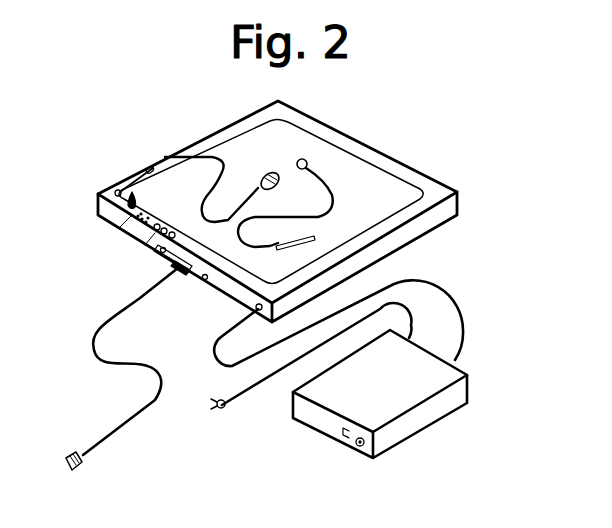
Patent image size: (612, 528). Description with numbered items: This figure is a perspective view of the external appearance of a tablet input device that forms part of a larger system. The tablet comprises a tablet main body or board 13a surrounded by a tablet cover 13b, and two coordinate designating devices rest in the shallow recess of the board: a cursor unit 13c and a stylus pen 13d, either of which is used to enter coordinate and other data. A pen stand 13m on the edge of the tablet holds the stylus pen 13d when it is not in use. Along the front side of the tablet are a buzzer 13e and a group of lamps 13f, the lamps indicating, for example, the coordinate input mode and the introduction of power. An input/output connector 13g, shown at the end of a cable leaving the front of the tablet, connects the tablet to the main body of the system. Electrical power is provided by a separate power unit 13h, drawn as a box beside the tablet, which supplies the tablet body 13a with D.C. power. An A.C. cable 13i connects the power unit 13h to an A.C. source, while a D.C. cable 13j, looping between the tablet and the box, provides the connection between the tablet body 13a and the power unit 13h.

The tablet main body 13a is at (395, 193).
The tablet cover 13b is at (444, 193).
The cursor unit 13c is at (278, 171).
The stylus pen 13d is at (315, 236).
The buzzer 13e is at (125, 228).
The group of lamps 13f is at (140, 247).
The input/output connector 13g is at (80, 466).
The power unit 13h is at (445, 408).
The A.C. cable 13i is at (263, 387).
The D.C. cable 13j is at (462, 313).
The pen stand 13m is at (125, 180).